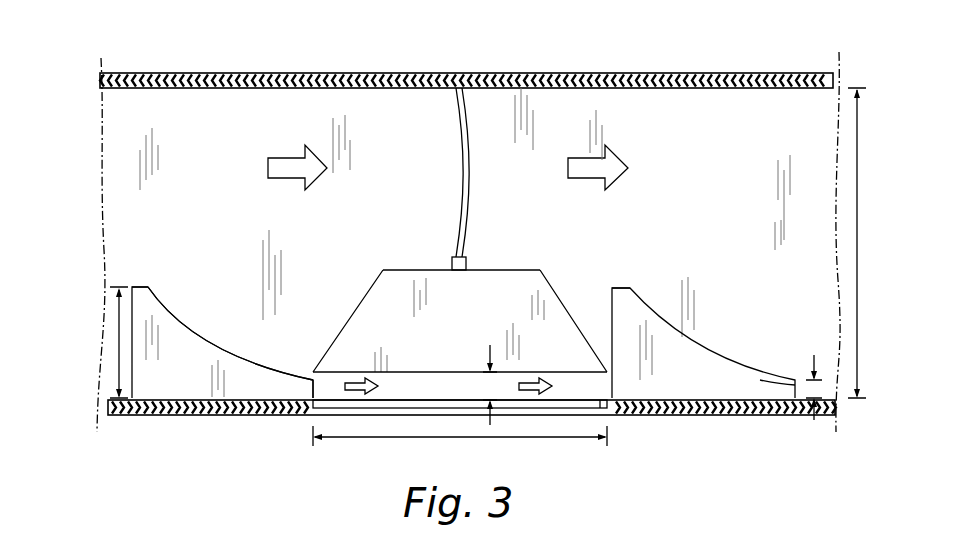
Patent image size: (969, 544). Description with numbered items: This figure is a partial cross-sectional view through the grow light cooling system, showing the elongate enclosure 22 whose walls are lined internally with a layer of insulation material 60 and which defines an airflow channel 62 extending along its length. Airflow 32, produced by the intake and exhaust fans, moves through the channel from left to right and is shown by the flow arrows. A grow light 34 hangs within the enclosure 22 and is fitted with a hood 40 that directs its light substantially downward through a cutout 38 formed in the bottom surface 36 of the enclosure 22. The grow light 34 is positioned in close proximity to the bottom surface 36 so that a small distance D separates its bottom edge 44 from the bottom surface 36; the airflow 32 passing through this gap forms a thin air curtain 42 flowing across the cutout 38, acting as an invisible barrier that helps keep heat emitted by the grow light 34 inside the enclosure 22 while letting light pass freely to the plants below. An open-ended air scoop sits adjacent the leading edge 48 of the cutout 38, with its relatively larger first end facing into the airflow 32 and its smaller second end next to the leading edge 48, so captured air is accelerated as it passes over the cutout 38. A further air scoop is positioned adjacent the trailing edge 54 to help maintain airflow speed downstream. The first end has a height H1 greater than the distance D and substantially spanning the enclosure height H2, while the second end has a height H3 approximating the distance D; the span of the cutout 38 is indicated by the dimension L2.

The enclosure 22 is at (468, 224).
The airflow 32 is at (283, 158).
The grow light 34 is at (457, 230).
The bottom surface 36 is at (222, 314).
The cutout 38 is at (313, 412).
The hood 40 is at (522, 270).
The air curtain 42 is at (368, 371).
The bottom edge 44 is at (417, 371).
The leading edge 48 is at (328, 371).
The trailing edge 54 is at (607, 413).
The insulation material 60 is at (180, 89).
The airflow channel 62 is at (120, 108).
The height of first end H1 is at (94, 342).
The height of enclosure H2 is at (857, 280).
The height of second end H3 is at (810, 380).
The distance D is at (488, 388).
The platform length L2 is at (440, 440).